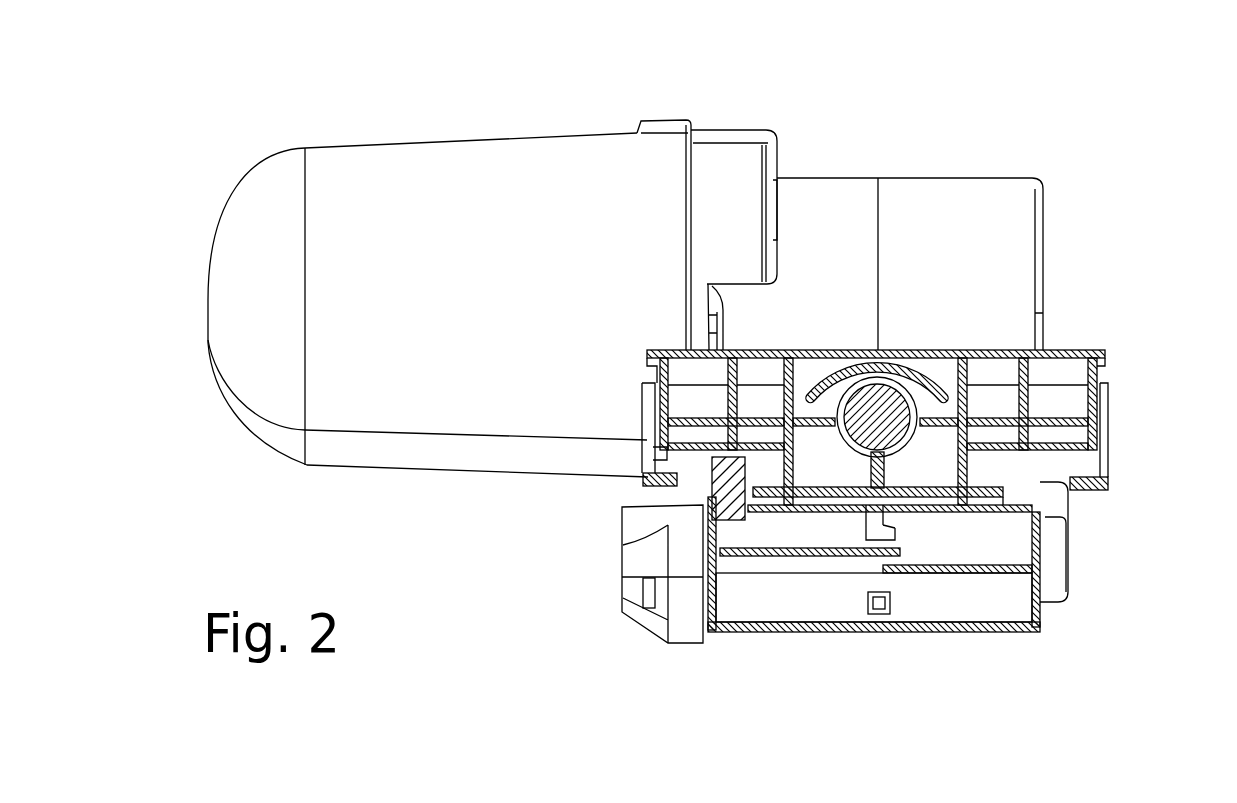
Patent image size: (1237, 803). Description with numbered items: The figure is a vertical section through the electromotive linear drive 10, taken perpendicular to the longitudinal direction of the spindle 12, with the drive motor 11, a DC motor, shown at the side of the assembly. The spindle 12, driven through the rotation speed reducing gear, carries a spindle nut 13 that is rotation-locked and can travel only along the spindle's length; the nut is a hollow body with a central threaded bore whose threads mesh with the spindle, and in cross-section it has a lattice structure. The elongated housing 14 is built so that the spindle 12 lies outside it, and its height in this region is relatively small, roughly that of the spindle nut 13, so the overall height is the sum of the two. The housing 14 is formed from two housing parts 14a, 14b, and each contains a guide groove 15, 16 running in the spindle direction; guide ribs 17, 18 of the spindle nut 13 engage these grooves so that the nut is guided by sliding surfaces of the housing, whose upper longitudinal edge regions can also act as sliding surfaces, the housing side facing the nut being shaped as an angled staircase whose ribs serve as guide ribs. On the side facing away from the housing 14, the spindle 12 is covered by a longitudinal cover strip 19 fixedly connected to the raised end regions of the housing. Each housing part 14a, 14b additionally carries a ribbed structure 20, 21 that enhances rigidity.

The electromotive linear drive 10 is at (1113, 332).
The drive motor 11 is at (452, 262).
The spindle 12 is at (902, 352).
The spindle nut 13 is at (1092, 373).
The housing 14 is at (946, 594).
The housing part 14a is at (1037, 628).
The housing part 14b is at (717, 637).
The guide groove 15 is at (1092, 468).
The guide groove 16 is at (773, 462).
The guide rib 17 is at (743, 482).
The guide rib 18 is at (1003, 500).
The cover strip 19 is at (862, 353).
The ribbed structure 20 is at (980, 572).
The ribbed structure 21 is at (796, 557).